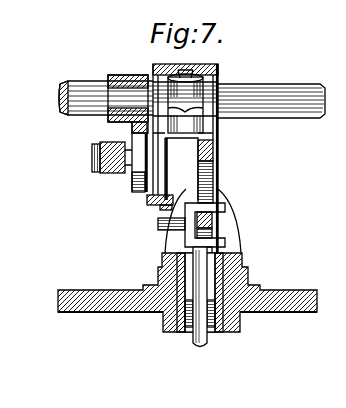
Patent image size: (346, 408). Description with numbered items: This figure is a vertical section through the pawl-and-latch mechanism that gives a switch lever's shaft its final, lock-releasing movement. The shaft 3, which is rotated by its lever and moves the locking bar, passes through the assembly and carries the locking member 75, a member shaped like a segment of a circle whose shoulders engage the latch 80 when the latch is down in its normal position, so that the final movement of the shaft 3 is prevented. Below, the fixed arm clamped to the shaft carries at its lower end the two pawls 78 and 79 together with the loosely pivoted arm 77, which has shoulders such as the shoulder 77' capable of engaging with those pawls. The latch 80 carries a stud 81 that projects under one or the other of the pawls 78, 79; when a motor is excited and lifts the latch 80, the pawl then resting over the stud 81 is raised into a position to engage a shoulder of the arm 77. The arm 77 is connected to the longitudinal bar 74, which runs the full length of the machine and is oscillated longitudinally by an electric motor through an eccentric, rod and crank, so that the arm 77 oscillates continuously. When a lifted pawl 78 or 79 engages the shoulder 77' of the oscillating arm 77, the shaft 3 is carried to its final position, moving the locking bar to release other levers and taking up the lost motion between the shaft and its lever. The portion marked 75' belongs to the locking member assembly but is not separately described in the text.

The shaft 3 is at (82, 92).
The loosely pivoted arm 77 is at (110, 133).
The longitudinal bar 74 is at (92, 166).
The shoulder 77' is at (119, 184).
The pawl 78 is at (147, 200).
The pawl 79 is at (172, 175).
The locking member 75 is at (197, 171).
The latch 80 is at (225, 209).
The stud 81 is at (158, 226).
The housing 75' is at (216, 221).